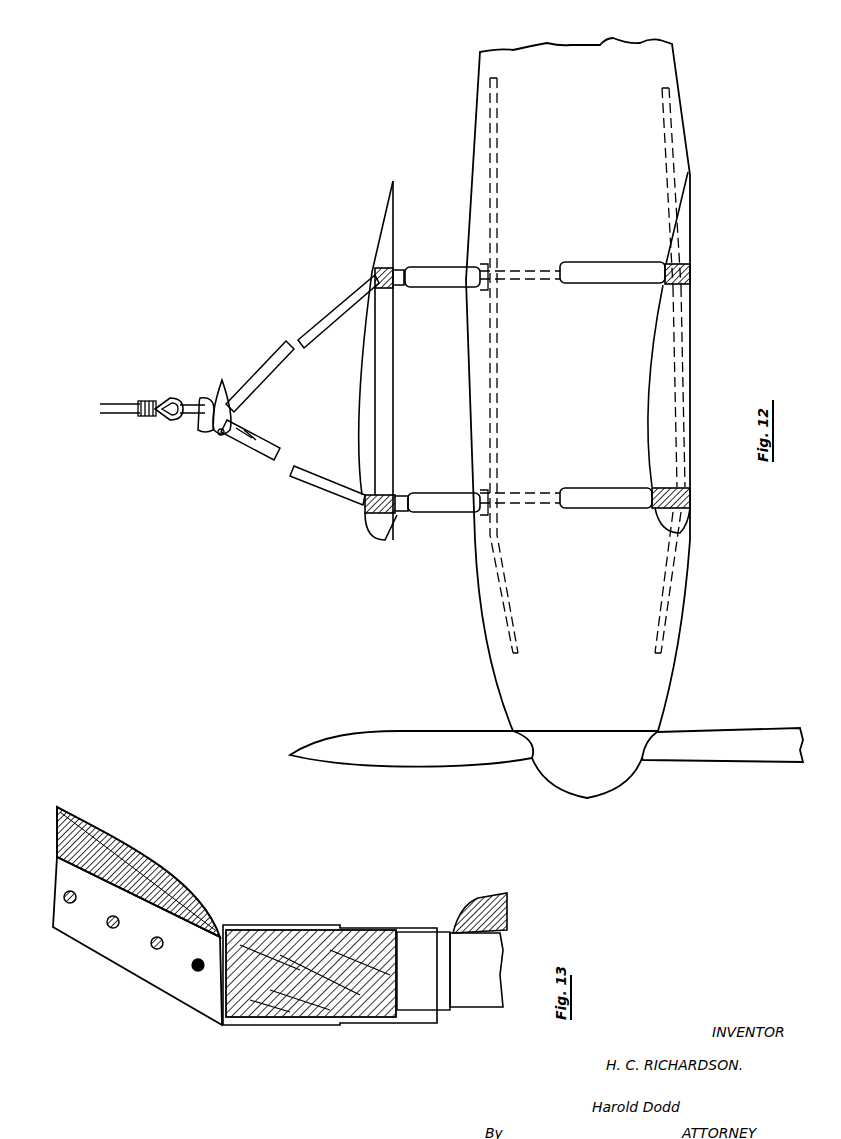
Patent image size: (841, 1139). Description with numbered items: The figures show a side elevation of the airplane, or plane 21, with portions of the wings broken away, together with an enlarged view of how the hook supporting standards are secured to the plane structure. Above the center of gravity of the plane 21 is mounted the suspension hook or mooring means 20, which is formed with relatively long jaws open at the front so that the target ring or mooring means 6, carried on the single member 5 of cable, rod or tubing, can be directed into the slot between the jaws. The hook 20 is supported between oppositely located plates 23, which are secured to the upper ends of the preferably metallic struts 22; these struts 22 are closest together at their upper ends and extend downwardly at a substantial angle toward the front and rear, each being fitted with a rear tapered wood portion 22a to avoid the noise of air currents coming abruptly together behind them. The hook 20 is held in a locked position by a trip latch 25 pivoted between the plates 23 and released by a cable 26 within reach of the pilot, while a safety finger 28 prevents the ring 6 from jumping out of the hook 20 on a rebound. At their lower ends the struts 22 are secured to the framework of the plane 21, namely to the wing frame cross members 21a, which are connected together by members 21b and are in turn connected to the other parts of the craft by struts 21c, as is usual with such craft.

In FIG. 12, the single member 5 is at (120, 403).
In FIG. 12, the target ring or mooring means 6 is at (186, 400).
In FIG. 12, the suspension hook or mooring means 20 is at (206, 398).
In FIG. 12, the plane 21 is at (546, 418).
In FIG. 12, the wing frame cross members 21a is at (398, 494).
In FIG. 13, the wing frame cross members 21a is at (357, 1012).
In FIG. 12, the connecting members 21b is at (383, 391).
In FIG. 12, the struts 21c is at (432, 282).
In FIG. 13, the struts 21c is at (478, 950).
In FIG. 12, the struts 22 is at (292, 352).
In FIG. 13, the struts 22 is at (137, 941).
In FIG. 12, the rear tapered wood portions 22a is at (318, 322).
In FIG. 13, the rear tapered wood portions 22a is at (108, 838).
In FIG. 12, the plates 23 is at (222, 407).
In FIG. 12, the trip latch 25 is at (250, 435).
In FIG. 12, the cable 26 is at (252, 438).
In FIG. 12, the safety finger 28 is at (216, 433).